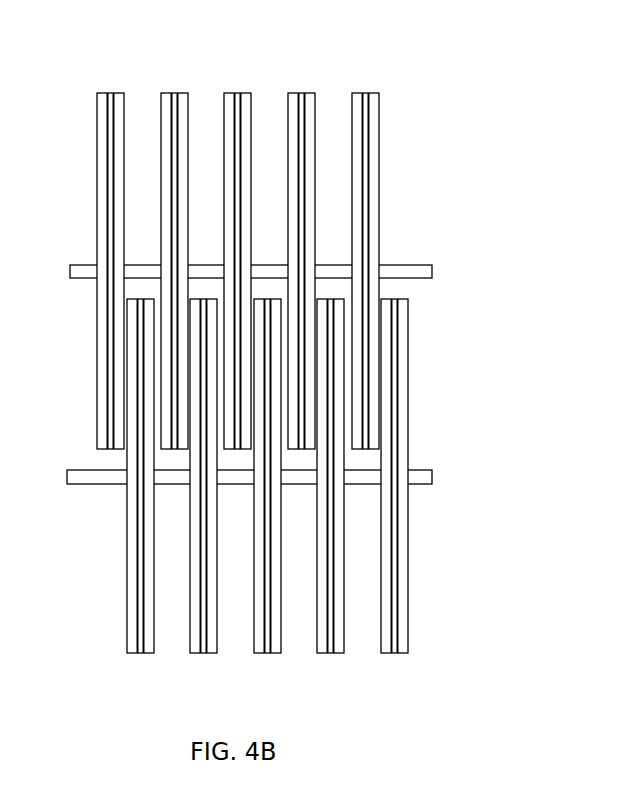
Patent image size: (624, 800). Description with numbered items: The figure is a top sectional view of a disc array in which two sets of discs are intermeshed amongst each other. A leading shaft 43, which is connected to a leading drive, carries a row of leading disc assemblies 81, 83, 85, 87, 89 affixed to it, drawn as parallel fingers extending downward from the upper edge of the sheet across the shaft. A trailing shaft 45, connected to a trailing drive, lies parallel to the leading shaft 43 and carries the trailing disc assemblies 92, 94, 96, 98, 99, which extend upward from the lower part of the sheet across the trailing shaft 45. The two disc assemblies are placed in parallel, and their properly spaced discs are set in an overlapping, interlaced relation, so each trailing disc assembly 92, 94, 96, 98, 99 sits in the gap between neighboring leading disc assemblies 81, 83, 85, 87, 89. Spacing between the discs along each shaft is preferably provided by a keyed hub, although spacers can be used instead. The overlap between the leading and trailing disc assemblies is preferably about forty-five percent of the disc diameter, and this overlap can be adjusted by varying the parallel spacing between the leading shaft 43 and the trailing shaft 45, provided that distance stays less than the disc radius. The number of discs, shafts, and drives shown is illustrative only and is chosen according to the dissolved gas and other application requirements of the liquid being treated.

The leading shaft 43 is at (413, 271).
The trailing shaft 45 is at (422, 472).
The leading disc assembly 81 is at (102, 93).
The leading disc assembly 83 is at (166, 93).
The leading disc assembly 85 is at (229, 93).
The leading disc assembly 87 is at (293, 93).
The first electrode finger 89 is at (357, 93).
The trailing disc assembly 92 is at (138, 654).
The trailing disc assembly 94 is at (201, 654).
The trailing disc assembly 96 is at (265, 654).
The trailing disc assembly 98 is at (328, 654).
The trailing disc assembly 99 is at (392, 654).